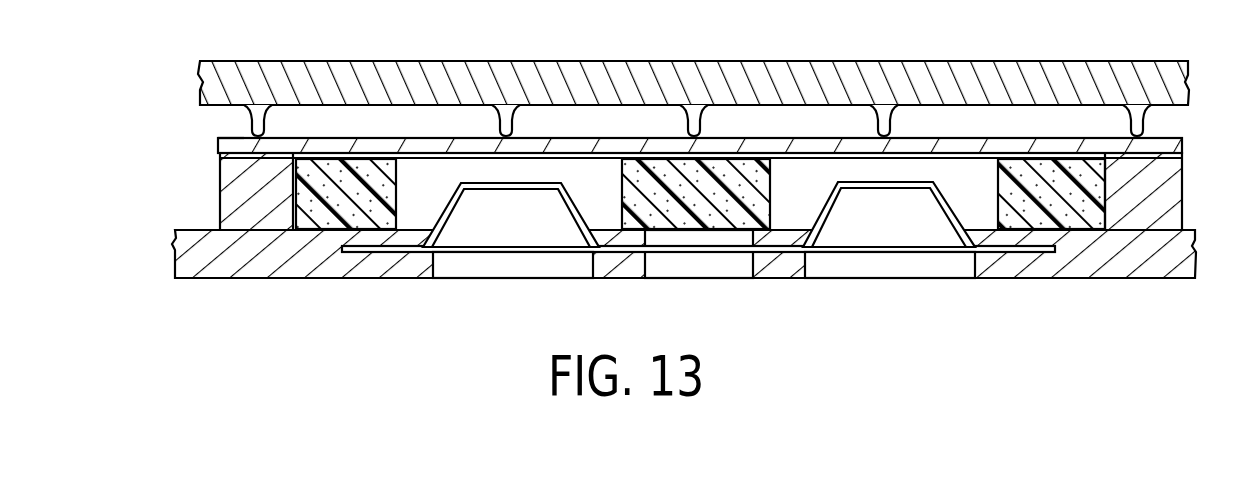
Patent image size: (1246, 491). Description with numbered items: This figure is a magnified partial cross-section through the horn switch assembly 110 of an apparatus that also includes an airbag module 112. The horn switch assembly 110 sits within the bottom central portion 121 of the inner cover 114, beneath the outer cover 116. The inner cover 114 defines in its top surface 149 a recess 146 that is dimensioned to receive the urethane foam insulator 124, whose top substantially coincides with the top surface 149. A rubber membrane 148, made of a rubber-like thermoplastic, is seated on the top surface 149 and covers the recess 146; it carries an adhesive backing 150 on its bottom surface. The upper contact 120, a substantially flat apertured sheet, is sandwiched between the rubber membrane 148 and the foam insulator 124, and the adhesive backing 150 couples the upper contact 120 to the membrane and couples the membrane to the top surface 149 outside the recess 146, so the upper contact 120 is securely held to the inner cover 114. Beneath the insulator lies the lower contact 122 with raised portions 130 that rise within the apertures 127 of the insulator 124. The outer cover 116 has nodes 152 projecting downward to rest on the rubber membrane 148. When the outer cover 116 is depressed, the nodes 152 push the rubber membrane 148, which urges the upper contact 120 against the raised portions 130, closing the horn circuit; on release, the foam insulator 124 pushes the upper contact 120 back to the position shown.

The horn switch assembly 110 is at (749, 129).
The airbag module 112 is at (705, 40).
The inner cover 114 is at (668, 280).
The outer cover 116 is at (498, 61).
The upper contact 120 is at (836, 162).
The bottom central portion 121 is at (512, 278).
The lower contact 122 is at (377, 252).
The urethane foam insulator 124 is at (1083, 215).
The apertures 127 is at (622, 181).
The raised portions 130 is at (468, 184).
The recess 146 is at (287, 222).
The rubber membrane 148 is at (347, 138).
The top surface 149 is at (218, 152).
The adhesive backing 150 is at (257, 155).
The nodes 152 is at (515, 118).